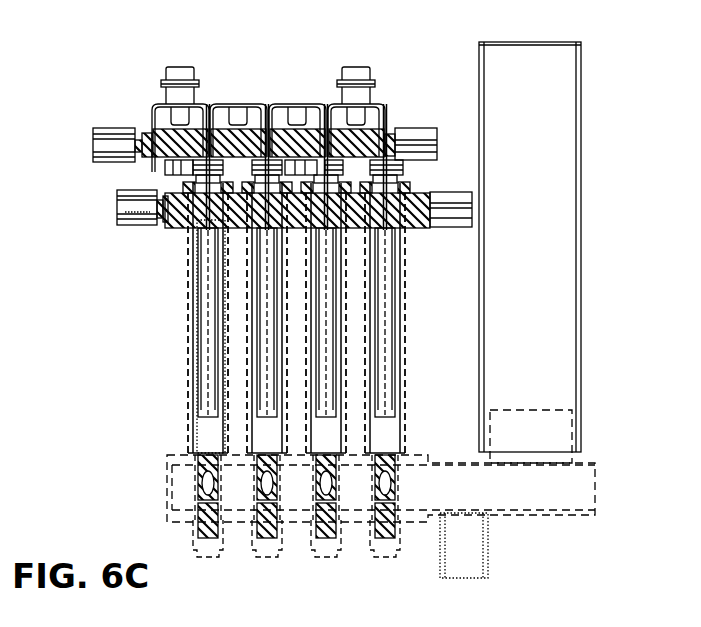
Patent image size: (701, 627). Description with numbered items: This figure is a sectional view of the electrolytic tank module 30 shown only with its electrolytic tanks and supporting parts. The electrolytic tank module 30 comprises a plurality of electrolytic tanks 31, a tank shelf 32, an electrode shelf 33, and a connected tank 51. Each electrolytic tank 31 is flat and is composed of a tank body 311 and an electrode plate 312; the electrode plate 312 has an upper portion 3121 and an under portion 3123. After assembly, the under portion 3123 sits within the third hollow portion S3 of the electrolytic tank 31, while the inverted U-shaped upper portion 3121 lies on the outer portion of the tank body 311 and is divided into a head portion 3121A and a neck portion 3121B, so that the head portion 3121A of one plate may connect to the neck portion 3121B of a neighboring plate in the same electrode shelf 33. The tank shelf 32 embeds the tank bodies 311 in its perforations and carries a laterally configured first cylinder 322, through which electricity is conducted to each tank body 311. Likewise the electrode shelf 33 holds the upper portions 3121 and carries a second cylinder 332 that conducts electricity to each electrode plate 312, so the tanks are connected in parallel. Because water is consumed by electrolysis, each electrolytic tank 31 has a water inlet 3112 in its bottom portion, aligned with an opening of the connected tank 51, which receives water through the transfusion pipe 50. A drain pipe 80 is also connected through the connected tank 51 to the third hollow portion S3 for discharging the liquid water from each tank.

The electrolytic tank module 30 is at (48, 80).
The upper portion 3121 is at (200, 53).
The head portion 3121A is at (150, 135).
The neck portion 3121B is at (208, 180).
The electrode plate 312 is at (305, 106).
The second cylinder 332 is at (93, 148).
The first cylinder 322 is at (120, 212).
The electrode shelf 33 is at (392, 136).
The tank shelf 32 is at (428, 194).
The electrolytic tank 31 is at (190, 327).
The tank body 311 is at (192, 243).
The under portion 3123 is at (208, 290).
The third hollow portion S3 is at (197, 432).
The water inlet 3112 is at (207, 490).
The connected tank 51 is at (165, 520).
The transfusion pipe 50 is at (482, 360).
The drain pipe 80 is at (490, 556).